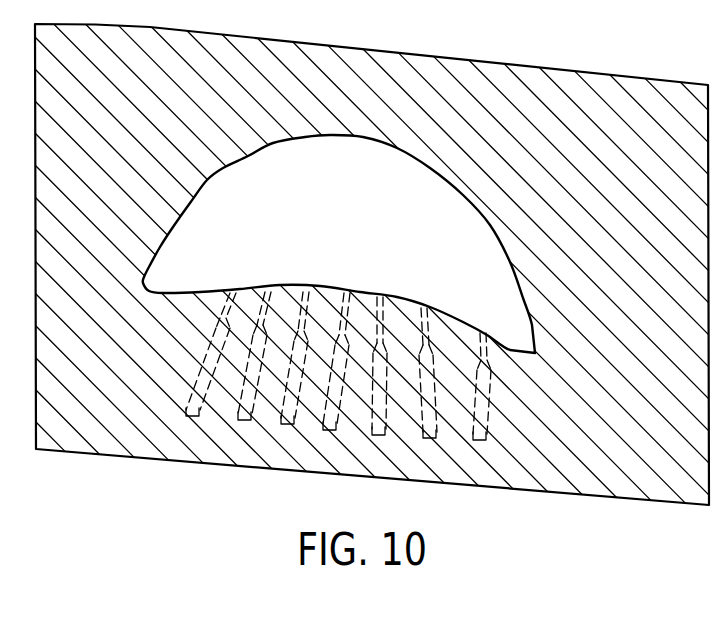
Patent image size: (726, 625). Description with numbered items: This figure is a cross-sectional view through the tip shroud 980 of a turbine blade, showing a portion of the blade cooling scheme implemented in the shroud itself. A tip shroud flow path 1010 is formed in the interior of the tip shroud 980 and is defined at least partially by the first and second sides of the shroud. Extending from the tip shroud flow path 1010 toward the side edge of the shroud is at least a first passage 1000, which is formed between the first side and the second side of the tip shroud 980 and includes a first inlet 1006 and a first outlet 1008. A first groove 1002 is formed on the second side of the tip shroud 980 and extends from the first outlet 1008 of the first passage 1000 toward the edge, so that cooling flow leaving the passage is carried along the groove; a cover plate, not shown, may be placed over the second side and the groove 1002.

The tip shroud 980 is at (633, 116).
The tip shroud flow path 1010 is at (248, 191).
The first groove 1002 is at (400, 369).
The first passage 1000 is at (526, 356).
The first inlet 1006 is at (483, 330).
The first outlet 1008 is at (479, 360).